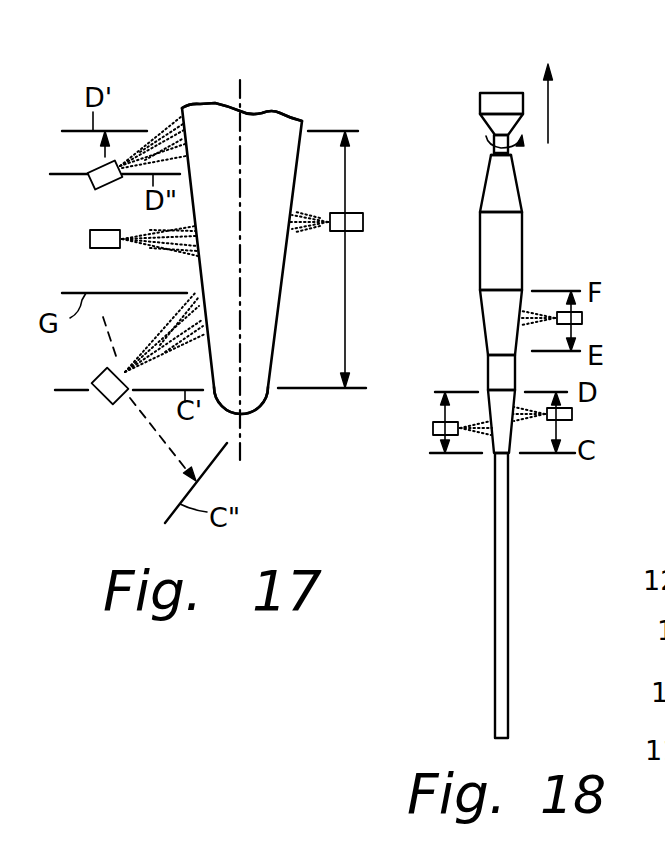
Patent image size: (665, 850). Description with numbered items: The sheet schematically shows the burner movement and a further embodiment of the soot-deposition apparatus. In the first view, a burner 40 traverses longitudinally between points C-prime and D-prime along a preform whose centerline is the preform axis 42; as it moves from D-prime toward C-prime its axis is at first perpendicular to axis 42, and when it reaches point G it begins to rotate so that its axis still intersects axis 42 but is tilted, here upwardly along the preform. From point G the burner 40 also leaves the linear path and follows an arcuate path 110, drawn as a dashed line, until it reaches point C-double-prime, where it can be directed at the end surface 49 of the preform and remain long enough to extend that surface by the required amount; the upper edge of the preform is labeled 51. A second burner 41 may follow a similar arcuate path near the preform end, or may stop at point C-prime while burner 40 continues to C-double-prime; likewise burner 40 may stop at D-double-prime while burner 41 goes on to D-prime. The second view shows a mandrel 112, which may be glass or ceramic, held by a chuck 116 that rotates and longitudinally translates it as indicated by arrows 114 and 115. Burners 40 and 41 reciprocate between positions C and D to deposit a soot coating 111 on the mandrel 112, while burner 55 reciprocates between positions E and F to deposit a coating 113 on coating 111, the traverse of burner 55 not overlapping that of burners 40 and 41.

In FIG. 17, the burner 40 is at (98, 181).
In FIG. 18, the burner 40 is at (433, 428).
In FIG. 17, the burner 41 is at (363, 222).
In FIG. 18, the burner 41 is at (572, 414).
In FIG. 17, the preform axis 42 is at (243, 333).
In FIG. 17, the end surface 49 is at (258, 412).
In FIG. 17, the tool top edge 51 is at (302, 122).
In FIG. 17, the arcuate path 110 is at (153, 427).
In FIG. 18, the coating 111 is at (497, 373).
In FIG. 18, the mandrel 112 is at (510, 583).
In FIG. 18, the coating 113 is at (515, 243).
In FIG. 18, the arrow 114 is at (486, 142).
In FIG. 18, the arrow 115 is at (548, 100).
In FIG. 18, the chuck 116 is at (480, 100).
In FIG. 18, the burner 55 is at (582, 318).